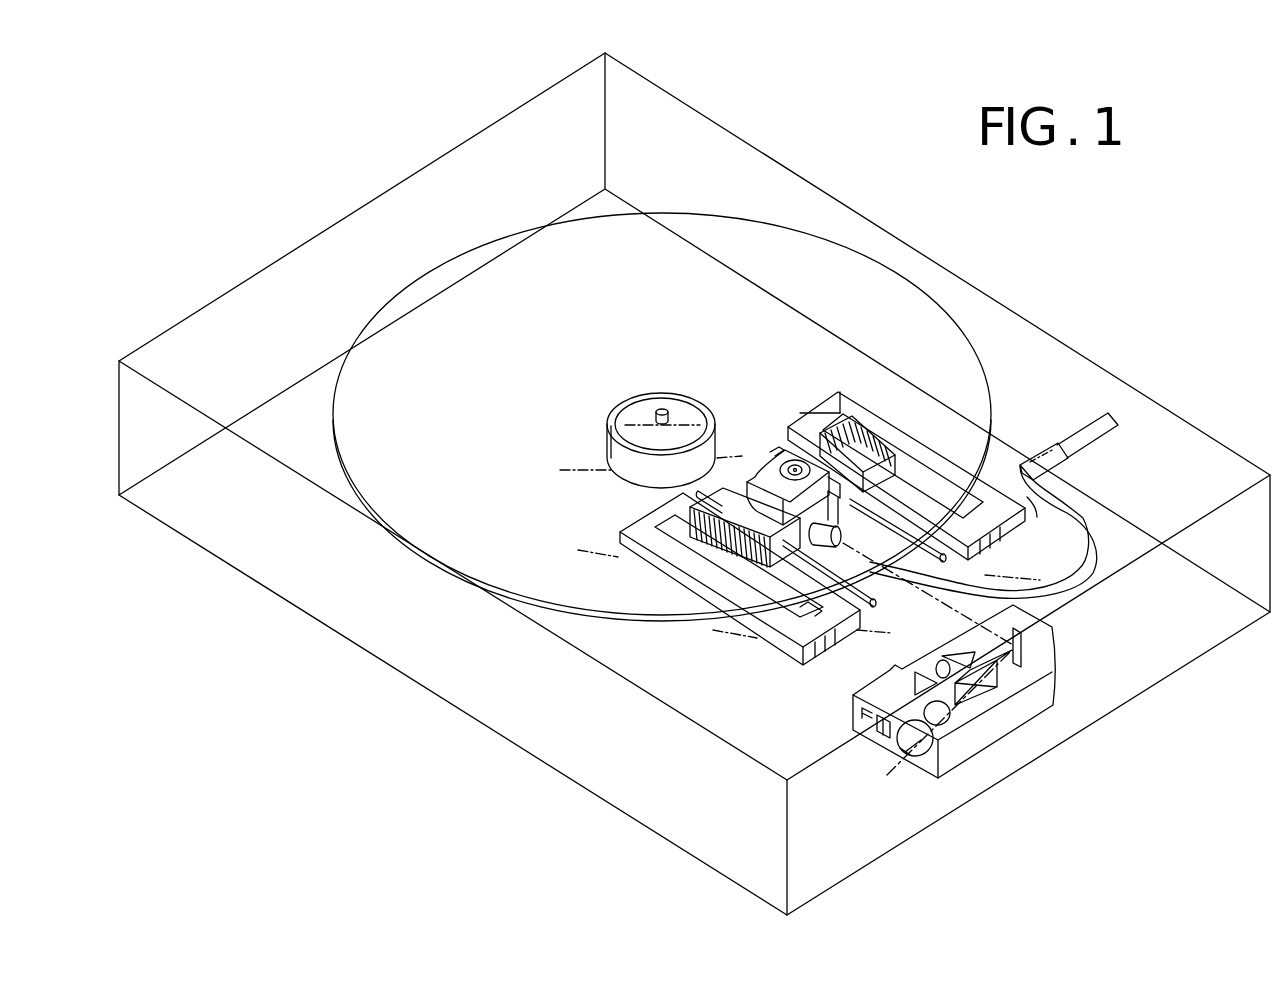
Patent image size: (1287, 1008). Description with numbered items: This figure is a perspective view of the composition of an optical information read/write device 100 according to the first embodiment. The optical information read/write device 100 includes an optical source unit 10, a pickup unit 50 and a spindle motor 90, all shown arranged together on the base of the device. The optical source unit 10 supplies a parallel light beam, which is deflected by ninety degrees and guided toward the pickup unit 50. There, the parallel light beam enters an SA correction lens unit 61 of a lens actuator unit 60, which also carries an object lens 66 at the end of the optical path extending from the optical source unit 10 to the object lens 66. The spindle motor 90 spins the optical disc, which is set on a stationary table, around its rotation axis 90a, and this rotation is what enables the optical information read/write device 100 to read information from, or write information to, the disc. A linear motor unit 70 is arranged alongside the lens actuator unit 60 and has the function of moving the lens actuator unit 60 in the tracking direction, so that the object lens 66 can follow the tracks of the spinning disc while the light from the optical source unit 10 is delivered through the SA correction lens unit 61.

The optical information read/write device 100 is at (402, 715).
The optical source unit 10 is at (1043, 688).
The pickup unit 50 is at (630, 502).
The lens actuator unit 60 is at (762, 469).
The SA correction lens unit 61 is at (823, 552).
The object lens 66 is at (794, 465).
The linear motor unit 70 is at (823, 382).
The spindle motor 90 is at (610, 447).
The rotation axis 90a is at (660, 412).